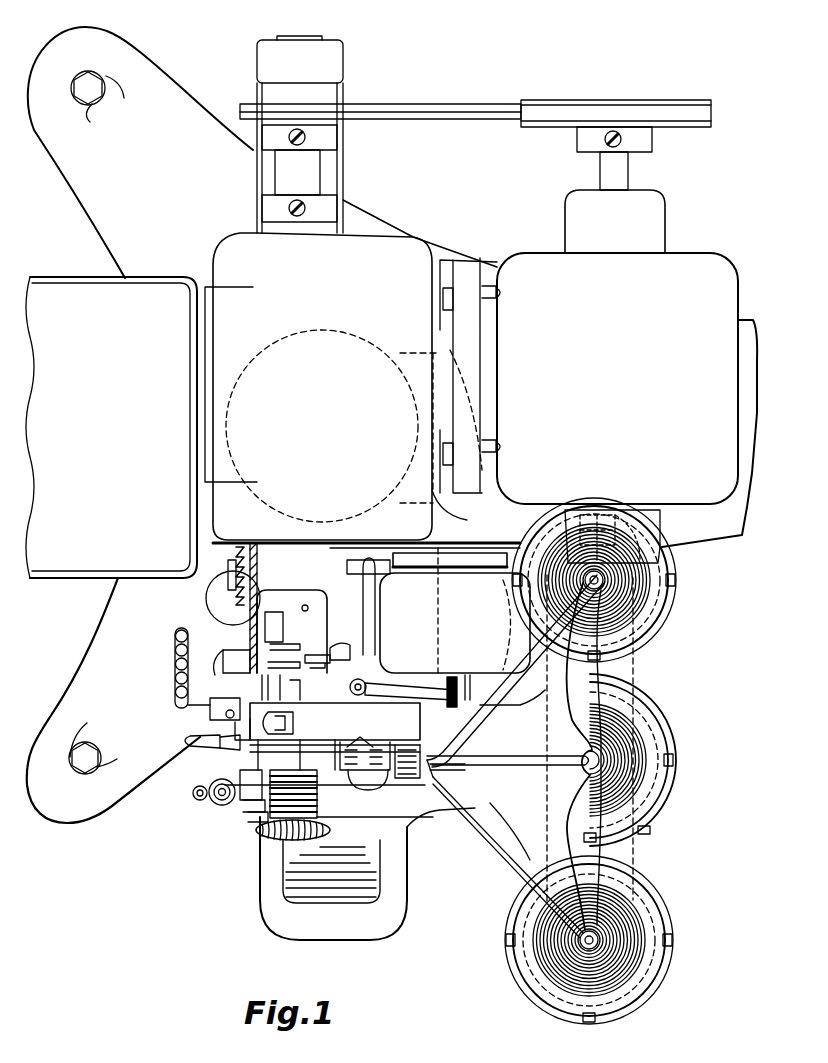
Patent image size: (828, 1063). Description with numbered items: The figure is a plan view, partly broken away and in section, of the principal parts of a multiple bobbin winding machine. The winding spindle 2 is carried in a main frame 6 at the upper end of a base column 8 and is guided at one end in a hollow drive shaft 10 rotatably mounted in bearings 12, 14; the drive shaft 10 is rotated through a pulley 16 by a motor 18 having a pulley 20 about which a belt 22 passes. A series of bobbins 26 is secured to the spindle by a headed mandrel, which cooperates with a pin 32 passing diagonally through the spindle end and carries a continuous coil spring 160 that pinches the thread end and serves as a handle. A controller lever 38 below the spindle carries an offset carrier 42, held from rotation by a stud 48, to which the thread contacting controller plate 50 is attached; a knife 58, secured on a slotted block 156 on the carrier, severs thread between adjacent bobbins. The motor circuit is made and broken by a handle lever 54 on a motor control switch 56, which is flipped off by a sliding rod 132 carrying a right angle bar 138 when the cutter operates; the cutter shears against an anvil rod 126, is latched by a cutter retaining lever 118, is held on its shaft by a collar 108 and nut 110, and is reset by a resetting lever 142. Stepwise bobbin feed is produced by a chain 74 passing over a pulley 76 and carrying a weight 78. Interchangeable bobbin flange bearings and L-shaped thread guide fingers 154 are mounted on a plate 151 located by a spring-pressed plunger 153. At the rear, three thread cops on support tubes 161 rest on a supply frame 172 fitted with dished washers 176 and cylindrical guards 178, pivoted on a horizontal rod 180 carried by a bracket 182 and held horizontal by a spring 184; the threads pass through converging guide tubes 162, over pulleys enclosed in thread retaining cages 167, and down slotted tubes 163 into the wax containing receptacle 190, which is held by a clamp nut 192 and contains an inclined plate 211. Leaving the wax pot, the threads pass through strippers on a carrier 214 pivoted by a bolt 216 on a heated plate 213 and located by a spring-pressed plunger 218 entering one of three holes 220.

The winding spindle 2 is at (308, 608).
The main frame 6 is at (362, 388).
The base column 8 is at (324, 331).
The hollow drive shaft 10 is at (300, 158).
The bearing 12 is at (300, 59).
The bearing 14 is at (257, 228).
The pulley 16 is at (352, 104).
The motor 18 is at (627, 368).
The pulley 20 is at (598, 105).
The belt 22 is at (447, 106).
The bobbins 26 is at (268, 688).
The pin 32 is at (287, 600).
The controller lever 38 is at (188, 705).
The offset carrier 42 is at (302, 685).
The stud 48 is at (225, 714).
The controller plate 50 is at (308, 745).
The handle lever 54 is at (462, 700).
The motor control switch 56 is at (430, 625).
The knife 58 is at (245, 795).
The chain 74 is at (197, 548).
The pulley 76 is at (215, 598).
The weight 78 is at (210, 615).
The collar 108 is at (262, 808).
The nut 110 is at (265, 820).
The cutter retaining lever 118 is at (227, 655).
The anvil rod 126 is at (313, 794).
The sliding rod 132 is at (376, 673).
The right angle bar 138 is at (405, 690).
The resetting lever 142 is at (182, 744).
The plate 151 is at (328, 710).
The spring-pressed plunger 153 is at (340, 648).
The thread guide fingers 154 is at (359, 730).
The block 156 is at (195, 770).
The coil spring 160 is at (270, 840).
The support tube 161 is at (605, 583).
The guide tubes 162 is at (505, 775).
The slotted tubes 163 is at (425, 815).
The thread retaining cage 167 is at (398, 777).
The supply frame 172 is at (630, 680).
The dished washer 176 is at (658, 608).
The cylindrical guard 178 is at (648, 650).
The horizontal rod 180 is at (592, 515).
The bracket 182 is at (572, 535).
The spring 184 is at (650, 832).
The wax containing receptacle 190 is at (333, 878).
The clamp nut 192 is at (175, 663).
The inclined plate 211 is at (375, 876).
The plate 213 is at (198, 772).
The carrier 214 is at (180, 760).
The bolt 216 is at (235, 730).
The spring-pressed plunger 218 is at (205, 778).
The holes 220 is at (210, 790).